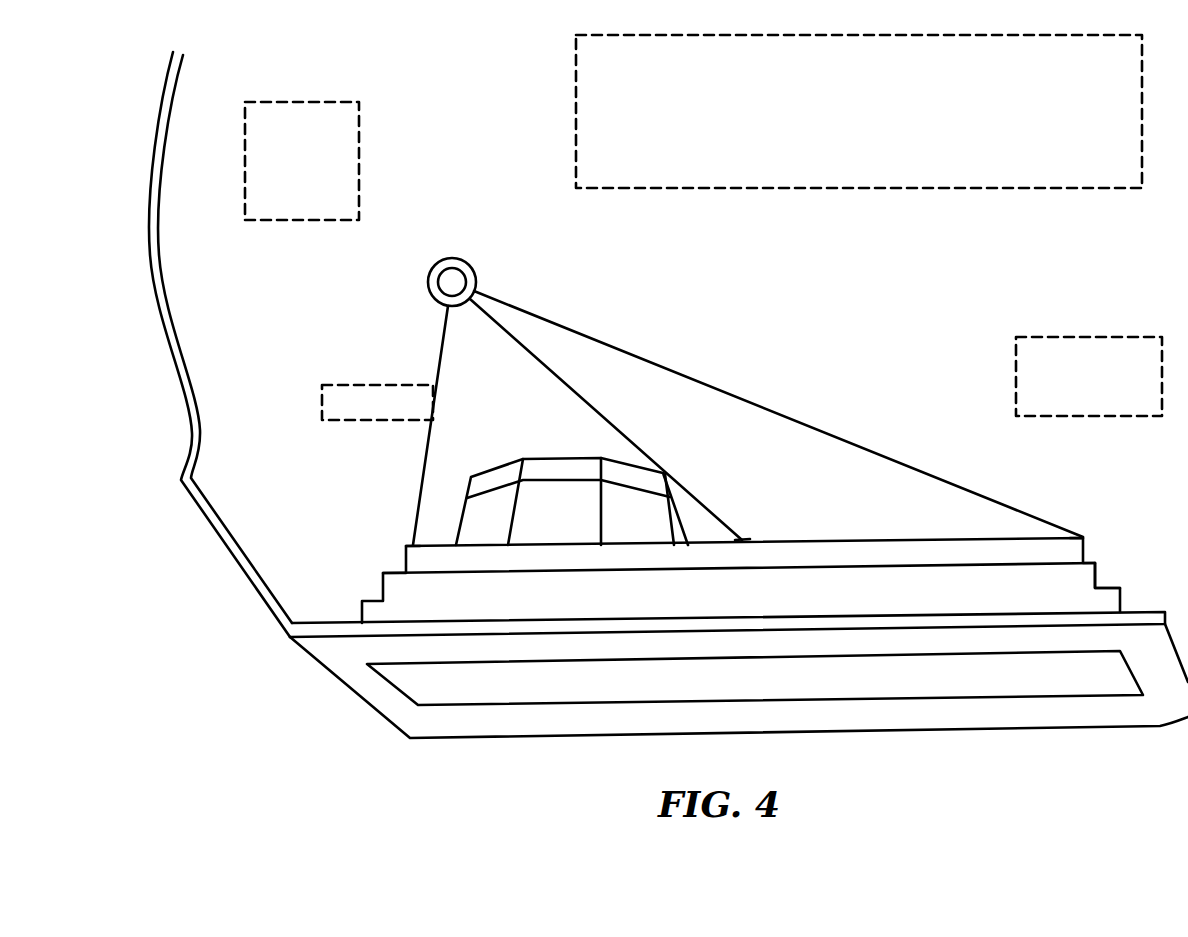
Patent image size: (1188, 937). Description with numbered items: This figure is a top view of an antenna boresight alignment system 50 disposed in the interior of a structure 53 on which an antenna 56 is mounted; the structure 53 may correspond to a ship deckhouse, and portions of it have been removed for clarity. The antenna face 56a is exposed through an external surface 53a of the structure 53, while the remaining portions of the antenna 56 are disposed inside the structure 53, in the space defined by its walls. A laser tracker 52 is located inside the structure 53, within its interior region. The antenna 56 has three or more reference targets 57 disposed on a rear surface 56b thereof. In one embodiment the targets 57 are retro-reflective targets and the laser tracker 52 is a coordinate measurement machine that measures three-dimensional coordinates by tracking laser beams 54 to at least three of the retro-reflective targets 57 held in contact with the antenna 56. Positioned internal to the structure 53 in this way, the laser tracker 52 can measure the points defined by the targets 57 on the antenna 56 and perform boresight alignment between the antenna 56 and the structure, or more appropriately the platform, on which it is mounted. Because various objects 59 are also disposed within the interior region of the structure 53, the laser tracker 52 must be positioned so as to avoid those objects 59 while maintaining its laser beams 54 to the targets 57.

The antenna boresight alignment system 50 is at (485, 124).
The laser tracker 52 is at (455, 246).
The structure 53 is at (185, 407).
The external surface 53a is at (1037, 726).
The laser beams 54 is at (766, 410).
The antenna 56 is at (1083, 522).
The antenna face 56a is at (760, 693).
The rear surface 56b is at (1097, 566).
The reference targets 57 is at (406, 546).
The objects 59 is at (312, 169).